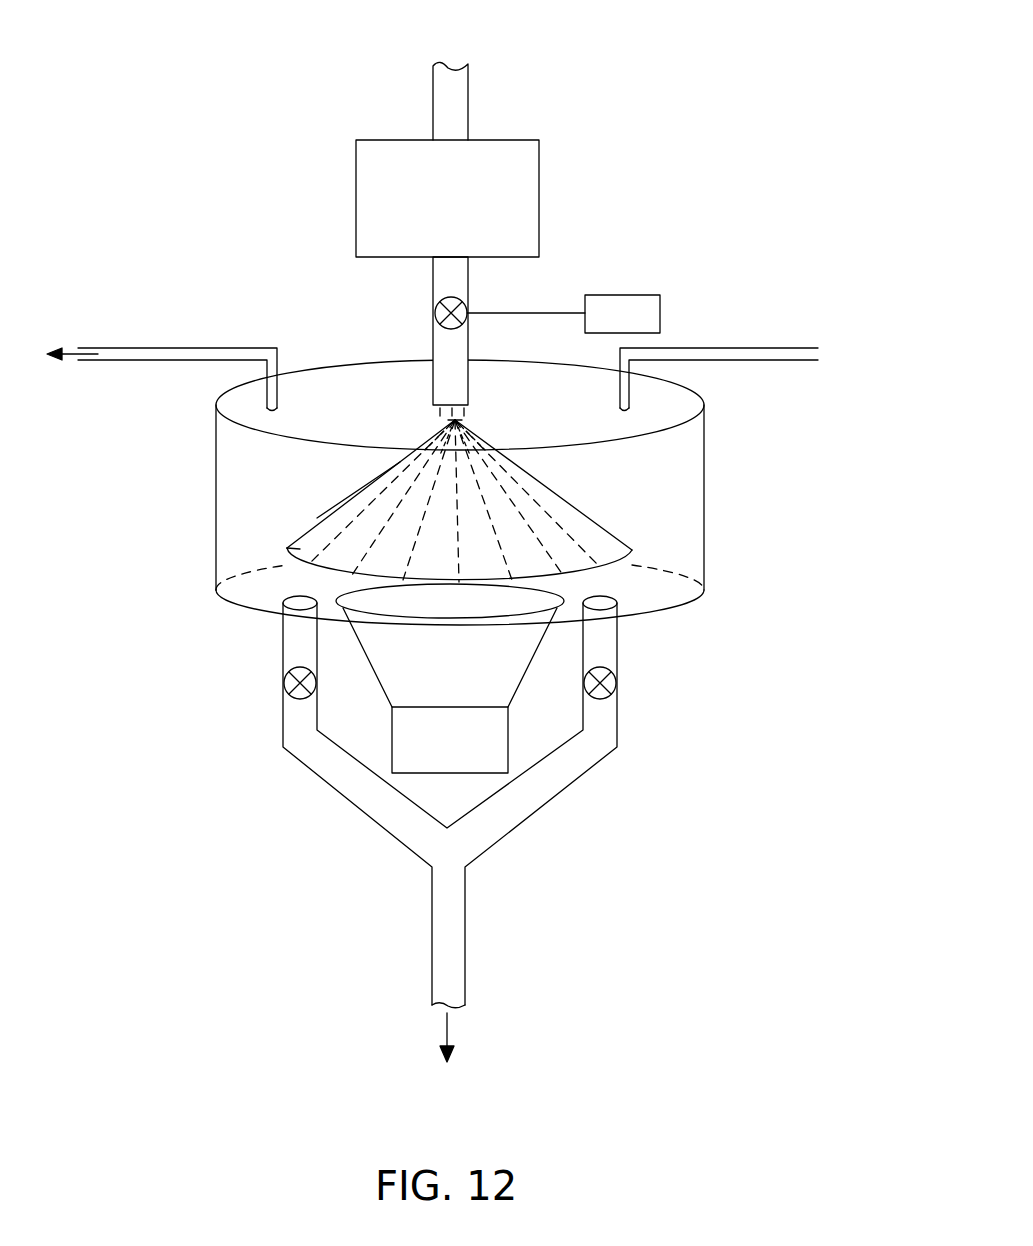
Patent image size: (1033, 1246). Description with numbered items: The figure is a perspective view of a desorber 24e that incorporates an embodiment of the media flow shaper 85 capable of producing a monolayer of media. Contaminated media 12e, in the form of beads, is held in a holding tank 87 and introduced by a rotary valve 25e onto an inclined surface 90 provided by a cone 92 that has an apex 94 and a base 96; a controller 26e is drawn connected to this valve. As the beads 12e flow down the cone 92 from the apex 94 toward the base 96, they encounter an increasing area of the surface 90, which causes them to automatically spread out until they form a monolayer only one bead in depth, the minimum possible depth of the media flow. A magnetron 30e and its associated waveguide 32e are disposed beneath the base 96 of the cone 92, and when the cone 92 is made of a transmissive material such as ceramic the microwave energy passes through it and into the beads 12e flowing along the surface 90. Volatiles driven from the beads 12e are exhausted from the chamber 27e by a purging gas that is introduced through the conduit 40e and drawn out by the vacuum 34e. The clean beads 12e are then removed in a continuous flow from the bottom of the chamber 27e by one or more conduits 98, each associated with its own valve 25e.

The desorber 24e is at (212, 162).
The contaminated media 12e is at (457, 107).
The holding tank 87 is at (510, 208).
The rotary valve 25e is at (435, 317).
The controller 26e is at (635, 312).
The vacuum 34e is at (187, 352).
The conduit 40e is at (787, 348).
The apex 94 is at (452, 420).
The chamber 27e is at (680, 466).
The media flow shaper 85 is at (619, 521).
The inclined surface 90 is at (582, 547).
The cone 92 is at (317, 518).
The base 96 is at (300, 549).
The conduits 98 is at (293, 643).
The magnetron 30e is at (508, 670).
The waveguide 32e is at (478, 750).